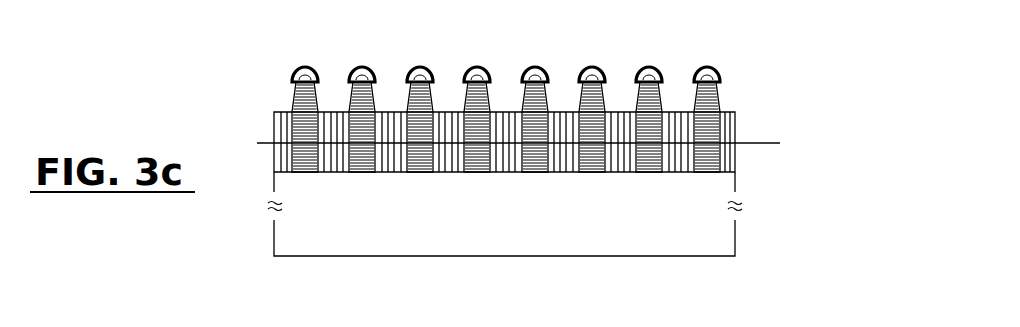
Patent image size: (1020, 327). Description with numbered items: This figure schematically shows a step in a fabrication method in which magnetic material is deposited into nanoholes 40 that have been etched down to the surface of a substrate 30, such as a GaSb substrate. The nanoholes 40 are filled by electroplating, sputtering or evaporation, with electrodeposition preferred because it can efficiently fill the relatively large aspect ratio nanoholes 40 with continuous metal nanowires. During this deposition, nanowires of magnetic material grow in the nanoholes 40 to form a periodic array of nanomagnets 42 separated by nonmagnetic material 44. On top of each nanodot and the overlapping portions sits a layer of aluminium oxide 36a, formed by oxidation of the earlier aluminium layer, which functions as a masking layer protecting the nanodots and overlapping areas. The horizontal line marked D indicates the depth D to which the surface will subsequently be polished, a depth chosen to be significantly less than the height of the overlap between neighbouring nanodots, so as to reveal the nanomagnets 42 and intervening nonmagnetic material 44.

The substrate 30 is at (720, 232).
The aluminium oxide 36a is at (654, 64).
The nanoholes 40 is at (446, 102).
The nanomagnets 42 is at (442, 158).
The nonmagnetic material 44 is at (588, 160).
The depth D is at (534, 146).